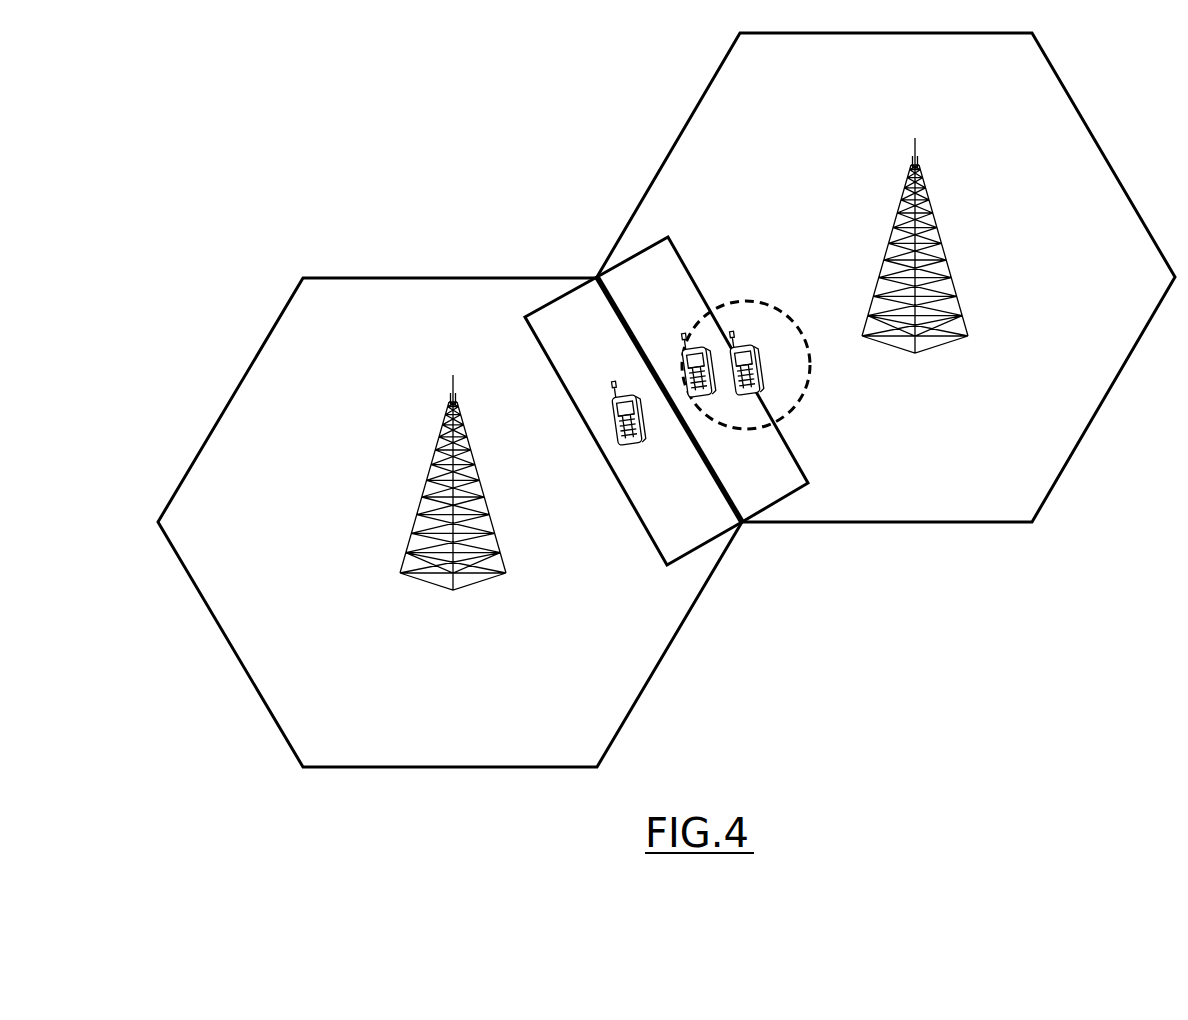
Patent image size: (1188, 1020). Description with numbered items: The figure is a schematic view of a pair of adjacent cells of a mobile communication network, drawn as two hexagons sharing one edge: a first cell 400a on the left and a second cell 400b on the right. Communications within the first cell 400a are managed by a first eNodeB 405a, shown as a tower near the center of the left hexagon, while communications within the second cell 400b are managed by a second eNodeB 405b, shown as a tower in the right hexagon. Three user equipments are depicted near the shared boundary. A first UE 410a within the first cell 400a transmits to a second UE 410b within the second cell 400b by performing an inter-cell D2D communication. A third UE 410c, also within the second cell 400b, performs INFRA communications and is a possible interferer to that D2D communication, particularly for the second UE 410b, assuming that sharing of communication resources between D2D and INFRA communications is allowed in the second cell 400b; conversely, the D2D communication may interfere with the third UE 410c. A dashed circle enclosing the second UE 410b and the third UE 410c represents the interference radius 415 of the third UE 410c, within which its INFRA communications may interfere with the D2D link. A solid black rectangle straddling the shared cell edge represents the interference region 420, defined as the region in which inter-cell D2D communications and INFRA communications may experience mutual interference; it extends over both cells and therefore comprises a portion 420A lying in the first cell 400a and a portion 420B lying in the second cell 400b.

The first cell 400a is at (268, 316).
The second cell 400b is at (668, 133).
The first eNodeB 405a is at (411, 556).
The second eNodeB 405b is at (958, 312).
The first UE 410a is at (628, 442).
The second UE 410b is at (700, 352).
The third UE 410c is at (760, 370).
The interference radius 415 is at (790, 300).
The interference region 420 is at (622, 398).
The first cell portion of interference region 420A is at (658, 556).
The second cell portion of interference region 420B is at (670, 237).